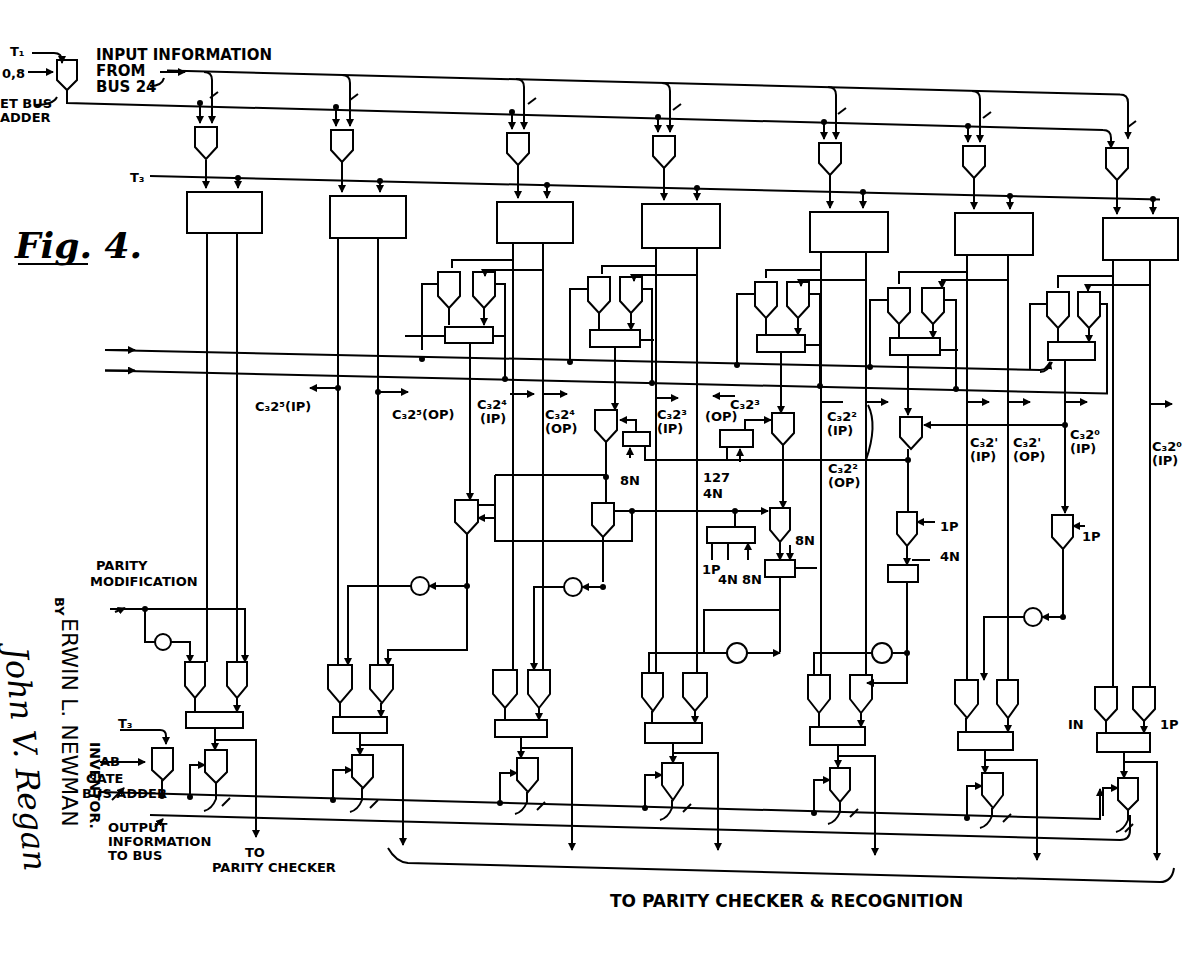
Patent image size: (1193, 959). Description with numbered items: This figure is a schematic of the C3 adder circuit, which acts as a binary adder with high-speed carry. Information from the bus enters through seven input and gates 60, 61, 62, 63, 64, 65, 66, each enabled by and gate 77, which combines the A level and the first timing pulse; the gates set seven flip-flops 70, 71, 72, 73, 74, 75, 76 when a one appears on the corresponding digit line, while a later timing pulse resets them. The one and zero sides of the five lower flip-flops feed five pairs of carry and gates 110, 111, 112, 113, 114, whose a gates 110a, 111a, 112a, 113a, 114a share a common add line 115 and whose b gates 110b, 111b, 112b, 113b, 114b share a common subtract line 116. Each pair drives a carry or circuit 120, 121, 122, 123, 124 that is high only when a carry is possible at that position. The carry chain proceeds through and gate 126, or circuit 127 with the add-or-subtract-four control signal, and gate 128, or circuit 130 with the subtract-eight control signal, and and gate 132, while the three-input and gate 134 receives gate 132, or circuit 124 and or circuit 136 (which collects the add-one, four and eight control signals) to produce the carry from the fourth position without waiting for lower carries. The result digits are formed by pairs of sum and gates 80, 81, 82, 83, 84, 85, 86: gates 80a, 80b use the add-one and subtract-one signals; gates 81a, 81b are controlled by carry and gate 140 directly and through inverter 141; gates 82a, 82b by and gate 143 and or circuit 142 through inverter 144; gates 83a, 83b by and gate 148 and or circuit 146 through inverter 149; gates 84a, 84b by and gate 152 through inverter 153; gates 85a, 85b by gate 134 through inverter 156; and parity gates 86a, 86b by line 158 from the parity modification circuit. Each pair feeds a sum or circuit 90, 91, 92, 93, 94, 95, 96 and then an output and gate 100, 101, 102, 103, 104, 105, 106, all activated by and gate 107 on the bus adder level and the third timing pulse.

The and gate 77 is at (58, 82).
The input and gate 66 is at (218, 140).
The input and gate 65 is at (354, 143).
The input and gate 64 is at (530, 147).
The input and gate 63 is at (676, 150).
The input and gate 62 is at (842, 158).
The input and gate 61 is at (986, 161).
The input and gate 60 is at (1128, 165).
The 2^6 flip-flop 76 is at (262, 203).
The 2^5 flip-flop 75 is at (406, 207).
The 2^4 flip-flop 74 is at (573, 213).
The 2^3 flip-flop 73 is at (720, 216).
The 2^2 flip-flop 72 is at (888, 223).
The 2^1 flip-flop 71 is at (1033, 224).
The 2^0 flip-flop 70 is at (1178, 230).
The positive carry and gate 114a is at (434, 268).
The negative carry and gate 114b is at (473, 272).
The pair of carry and gates 114 is at (469, 404).
The carry or circuit 124 is at (514, 328).
The positive carry and gate 113a is at (584, 272).
The negative carry and gate 113b is at (622, 276).
The pair of carry and gates 113 is at (615, 361).
The carry or circuit 123 is at (650, 340).
The positive carry and gate 112a is at (748, 288).
The negative carry and gate 112b is at (790, 282).
The pair of carry and gates 112 is at (781, 365).
The carry or circuit 122 is at (816, 345).
The positive carry and gate 111a is at (894, 284).
The negative carry and gate 111b is at (927, 284).
The pair of carry and gates 111 is at (915, 369).
The carry or circuit 121 is at (958, 350).
The positive carry and gate 110a is at (1046, 300).
The negative carry and gate 110b is at (1078, 292).
The pair of carry and gates 110 is at (1071, 420).
The carry or circuit 120 is at (1041, 380).
The add line 115 is at (190, 342).
The subtract line 116 is at (170, 374).
The and gate 132 is at (595, 445).
The or circuit 130 is at (640, 424).
The and gate 128 is at (784, 424).
The or circuit 127 is at (714, 460).
The and gate 126 is at (916, 424).
The three-input carry and gate 134 is at (460, 498).
The and gate 152 is at (588, 514).
The and gate 148 is at (784, 510).
The or circuit 136 is at (708, 538).
The or circuit 146 is at (817, 568).
The and gate 143 is at (910, 520).
The or circuit 142 is at (912, 585).
The carry and gate 140 is at (1068, 514).
The inverter 156 is at (416, 577).
The inverter 153 is at (584, 566).
The parity modification line 158 is at (171, 634).
The inverter 149 is at (745, 662).
The inverter 144 is at (886, 643).
The inverter 141 is at (1032, 608).
The parity and gate 86b is at (185, 674).
The parity and gate 86a is at (255, 668).
The parity and gates 86 is at (220, 653).
The sum or circuit 96 is at (243, 722).
The and gate 107 is at (172, 750).
The output and gate 106 is at (204, 762).
The sum and gate 85b is at (328, 668).
The sum and gate 85a is at (393, 672).
The pair of sum and gates 85 is at (366, 655).
The sum or circuit 95 is at (387, 726).
The output and gate 105 is at (348, 770).
The sum and gate 84b is at (494, 671).
The sum and gate 84a is at (550, 677).
The pair of sum and gates 84 is at (532, 660).
The sum or circuit 94 is at (547, 731).
The output and gate 104 is at (513, 774).
The sum and gate 83b is at (642, 692).
The sum and gate 83a is at (707, 695).
The pair of sum and gates 83 is at (676, 646).
The sum or circuit 93 is at (702, 736).
The output and gate 103 is at (656, 777).
The sum and gate 82b is at (808, 694).
The sum and gate 82a is at (872, 697).
The pair of sum and gates 82 is at (842, 650).
The sum or circuit 92 is at (865, 740).
The output and gate 102 is at (824, 779).
The sum and gate 81b is at (955, 682).
The sum and gate 81a is at (1018, 692).
The pair of sum and gates 81 is at (996, 666).
The sum or circuit 91 is at (997, 789).
The output and gate 101 is at (978, 784).
The sum and gate 80b is at (1095, 688).
The sum and gate 80a is at (1155, 688).
The pair of sum and gates 80 is at (1134, 682).
The sum or circuit 90 is at (1097, 742).
The output and gate 100 is at (1114, 780).